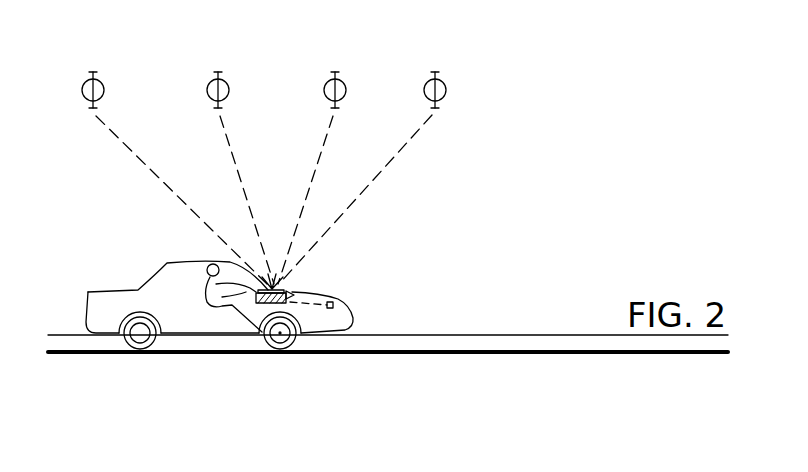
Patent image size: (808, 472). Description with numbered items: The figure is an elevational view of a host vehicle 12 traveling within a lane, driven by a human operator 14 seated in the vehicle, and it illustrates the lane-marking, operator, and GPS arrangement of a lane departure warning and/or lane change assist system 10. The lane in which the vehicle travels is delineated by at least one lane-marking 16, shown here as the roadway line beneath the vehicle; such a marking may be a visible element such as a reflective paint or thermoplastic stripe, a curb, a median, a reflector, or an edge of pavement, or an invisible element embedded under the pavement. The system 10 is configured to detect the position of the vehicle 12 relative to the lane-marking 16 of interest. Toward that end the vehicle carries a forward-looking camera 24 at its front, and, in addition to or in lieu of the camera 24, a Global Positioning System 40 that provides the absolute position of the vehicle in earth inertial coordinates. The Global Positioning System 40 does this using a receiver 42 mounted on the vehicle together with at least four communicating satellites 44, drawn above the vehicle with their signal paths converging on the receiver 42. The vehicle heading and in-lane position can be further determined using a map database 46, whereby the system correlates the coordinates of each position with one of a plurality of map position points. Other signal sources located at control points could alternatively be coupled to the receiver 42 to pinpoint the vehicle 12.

The lane departure warning and/or lane change assist system 10 is at (545, 158).
The host vehicle 12 is at (105, 292).
The human operator 14 is at (208, 281).
The lane-marking 16 is at (557, 352).
The forward-looking camera 24 is at (331, 302).
The Global Positioning System 40 is at (249, 156).
The receiver 42 is at (289, 289).
The communicating satellites 44 is at (100, 84).
The map database 46 is at (291, 295).